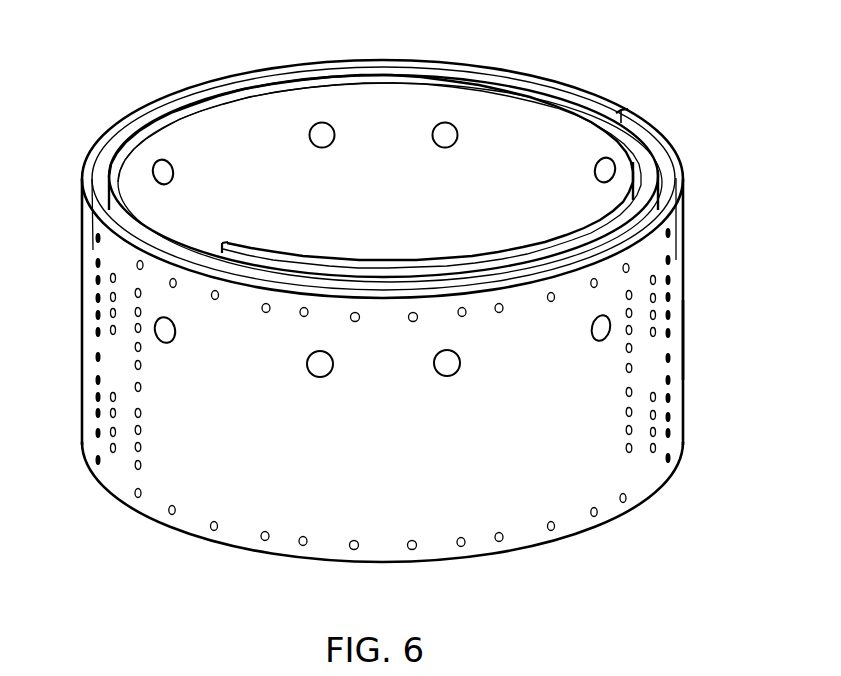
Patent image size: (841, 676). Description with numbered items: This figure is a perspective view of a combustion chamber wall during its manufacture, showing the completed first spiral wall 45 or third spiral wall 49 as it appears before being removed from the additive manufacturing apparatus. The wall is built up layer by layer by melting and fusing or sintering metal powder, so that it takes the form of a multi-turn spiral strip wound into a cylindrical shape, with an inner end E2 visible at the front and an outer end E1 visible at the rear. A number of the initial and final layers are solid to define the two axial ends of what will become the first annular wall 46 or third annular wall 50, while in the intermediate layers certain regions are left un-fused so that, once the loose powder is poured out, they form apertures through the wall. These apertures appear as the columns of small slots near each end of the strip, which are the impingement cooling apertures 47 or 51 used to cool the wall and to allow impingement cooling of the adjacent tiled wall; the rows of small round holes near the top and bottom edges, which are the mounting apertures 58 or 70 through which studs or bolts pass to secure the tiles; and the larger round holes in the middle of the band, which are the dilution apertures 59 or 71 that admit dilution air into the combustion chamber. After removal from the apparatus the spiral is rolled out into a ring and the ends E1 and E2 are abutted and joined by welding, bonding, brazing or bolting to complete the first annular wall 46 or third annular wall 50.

The first spiral wall 45 is at (444, 311).
The third spiral wall 49 is at (684, 200).
The first annular wall 46 is at (744, 340).
The third annular wall 50 is at (684, 341).
The impingement cooling apertures 47 is at (408, 346).
The impingement cooling apertures 51 is at (96, 263).
The mounting apertures 58 is at (425, 415).
The mounting apertures 70 is at (627, 368).
The dilution apertures 59 is at (384, 239).
The dilution apertures 71 is at (442, 130).
The end E1 is at (621, 109).
The end E2 is at (227, 244).